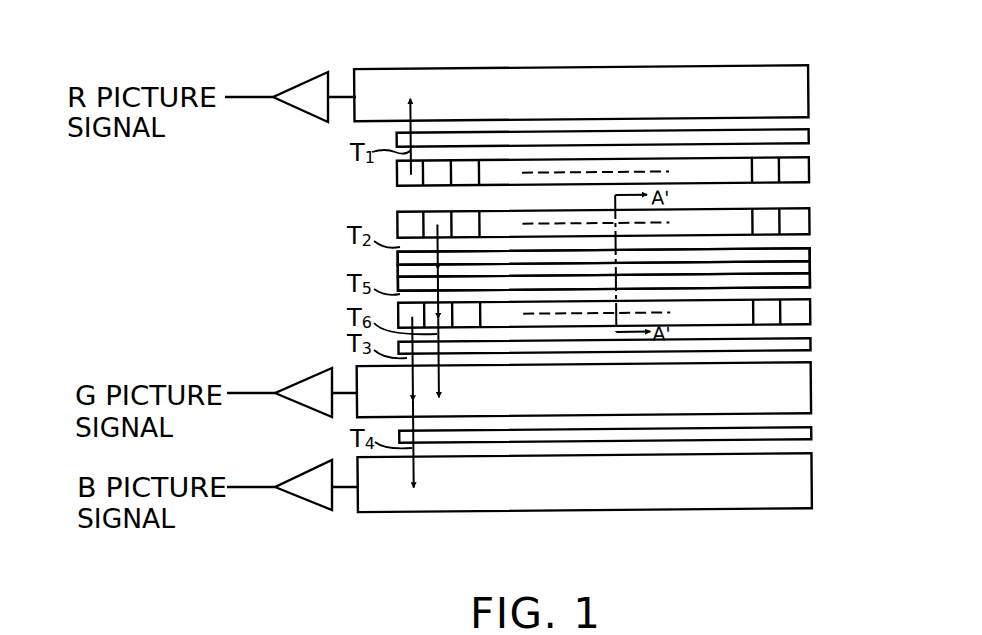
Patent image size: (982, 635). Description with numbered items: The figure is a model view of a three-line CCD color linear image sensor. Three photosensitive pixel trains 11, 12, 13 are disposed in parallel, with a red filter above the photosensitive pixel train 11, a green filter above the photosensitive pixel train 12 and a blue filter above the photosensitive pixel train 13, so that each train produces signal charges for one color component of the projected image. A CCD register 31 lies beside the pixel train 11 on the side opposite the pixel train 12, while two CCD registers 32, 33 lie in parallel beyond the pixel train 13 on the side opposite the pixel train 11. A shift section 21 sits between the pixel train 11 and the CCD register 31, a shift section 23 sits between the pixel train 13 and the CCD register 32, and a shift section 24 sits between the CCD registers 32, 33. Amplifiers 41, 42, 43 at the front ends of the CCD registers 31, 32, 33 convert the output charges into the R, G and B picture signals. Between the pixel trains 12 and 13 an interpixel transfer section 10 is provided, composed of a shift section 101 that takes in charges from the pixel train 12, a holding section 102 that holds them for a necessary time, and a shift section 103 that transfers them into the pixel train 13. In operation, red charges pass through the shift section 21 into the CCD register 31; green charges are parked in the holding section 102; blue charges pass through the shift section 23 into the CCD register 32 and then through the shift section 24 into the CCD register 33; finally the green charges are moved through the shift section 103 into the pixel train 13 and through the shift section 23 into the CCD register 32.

The interpixel transfer section 10 is at (396, 262).
The shift section 101 is at (809, 250).
The holding section 102 is at (809, 262).
The shift section 103 is at (809, 277).
The photosensitive pixel train 11 is at (809, 167).
The photosensitive pixel train 12 is at (809, 215).
The photosensitive pixel train 13 is at (809, 310).
The shift section 21 is at (809, 134).
The shift section 23 is at (809, 343).
The shift section 24 is at (811, 430).
The CCD register 31 is at (809, 85).
The CCD register 32 is at (811, 385).
The CCD register 33 is at (811, 473).
The amplifier 41 is at (300, 80).
The amplifier 42 is at (310, 378).
The amplifier 43 is at (310, 472).